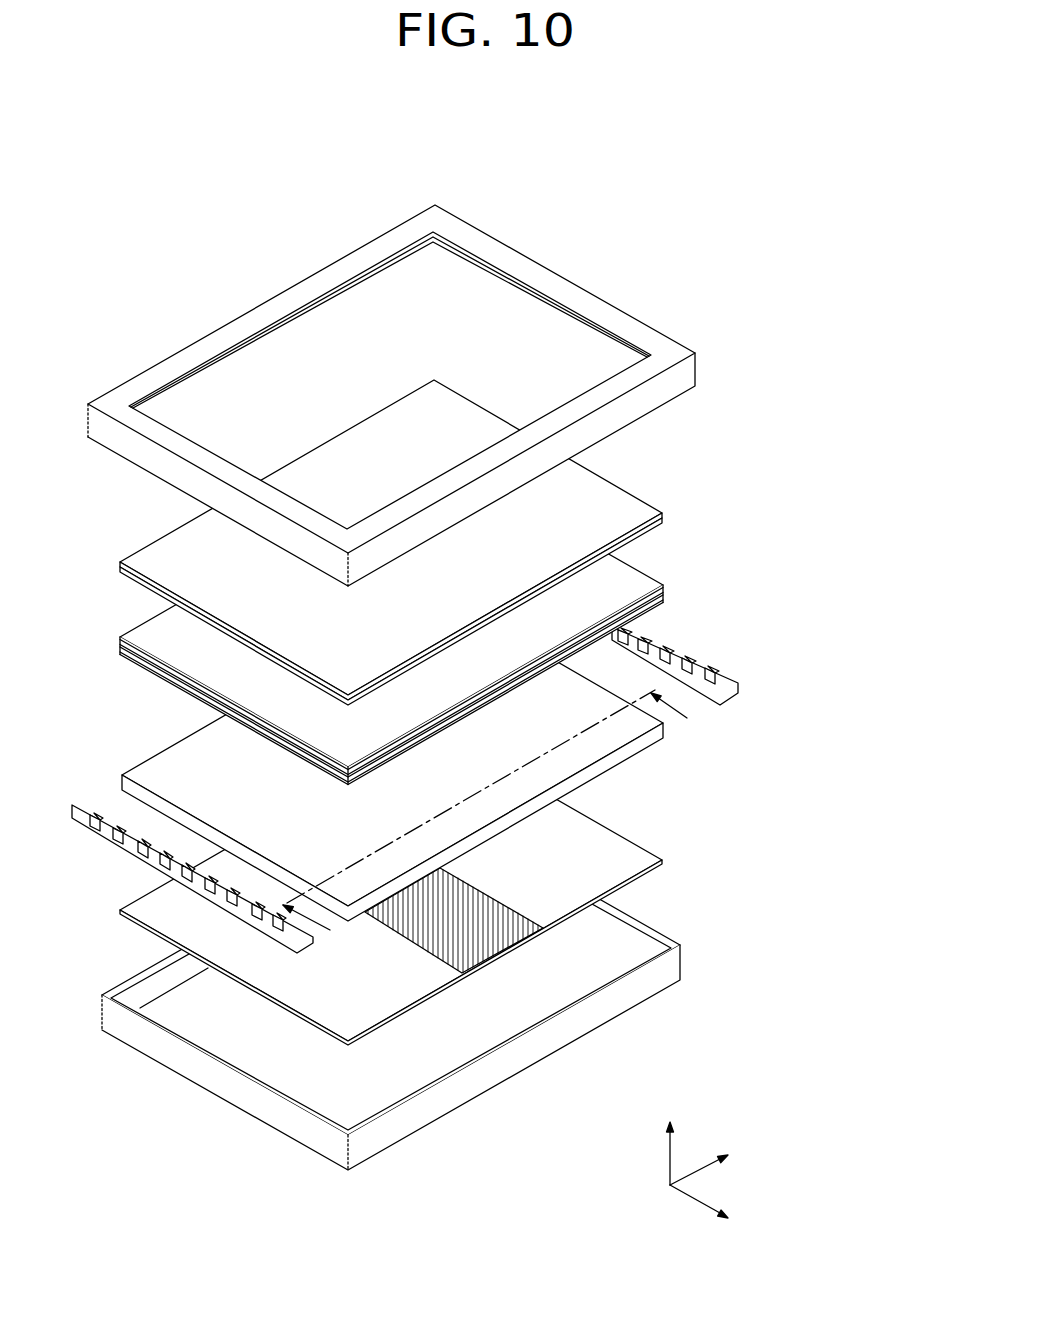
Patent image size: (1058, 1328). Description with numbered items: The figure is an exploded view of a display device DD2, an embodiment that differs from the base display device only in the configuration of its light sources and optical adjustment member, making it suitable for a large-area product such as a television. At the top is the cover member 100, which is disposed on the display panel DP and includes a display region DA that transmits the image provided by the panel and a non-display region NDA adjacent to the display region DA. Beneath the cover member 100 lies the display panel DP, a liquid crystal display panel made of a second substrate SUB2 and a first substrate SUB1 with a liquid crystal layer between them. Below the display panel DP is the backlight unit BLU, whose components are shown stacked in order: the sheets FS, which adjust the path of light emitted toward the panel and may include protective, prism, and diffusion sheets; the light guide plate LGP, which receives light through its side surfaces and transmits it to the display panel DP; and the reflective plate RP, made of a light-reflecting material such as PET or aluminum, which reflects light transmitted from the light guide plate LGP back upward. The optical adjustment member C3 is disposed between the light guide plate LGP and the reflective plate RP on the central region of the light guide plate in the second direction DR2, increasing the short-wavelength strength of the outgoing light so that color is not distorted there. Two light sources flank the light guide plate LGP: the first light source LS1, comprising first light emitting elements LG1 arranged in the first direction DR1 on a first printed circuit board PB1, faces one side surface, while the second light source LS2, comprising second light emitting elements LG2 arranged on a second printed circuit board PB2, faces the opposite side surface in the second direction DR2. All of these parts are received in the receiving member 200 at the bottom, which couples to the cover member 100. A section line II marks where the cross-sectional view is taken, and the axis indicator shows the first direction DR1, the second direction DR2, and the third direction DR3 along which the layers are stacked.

The display device DD2 is at (230, 260).
The cover member 100 is at (412, 382).
The display region DA is at (465, 279).
The non-display region NDA is at (560, 289).
The display panel DP is at (491, 542).
The second substrate SUB2 is at (664, 514).
The first substrate SUB1 is at (664, 521).
The backlight unit BLU is at (484, 750).
The sheets FS is at (493, 620).
The second light source LS2 is at (744, 660).
The second light emitting elements LG2 is at (677, 653).
The second printed circuit board PB2 is at (740, 694).
The light guide plate LGP is at (664, 737).
The reflective plate RP is at (493, 887).
The optical adjustment member C3 is at (497, 940).
The first light source LS1 is at (174, 823).
The first light emitting elements LG1 is at (92, 817).
The first printed circuit board PB1 is at (77, 813).
The receiving member 200 is at (676, 967).
The section line II-II' II is at (498, 821).
The first direction DR1 is at (719, 1209).
The second direction DR2 is at (719, 1162).
The third direction DR3 is at (671, 1139).